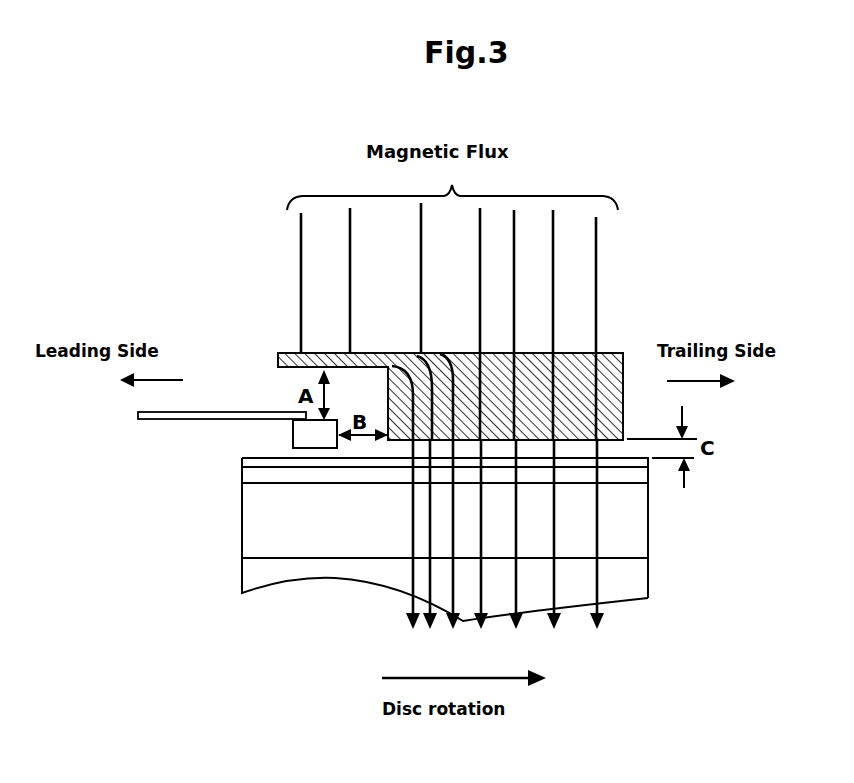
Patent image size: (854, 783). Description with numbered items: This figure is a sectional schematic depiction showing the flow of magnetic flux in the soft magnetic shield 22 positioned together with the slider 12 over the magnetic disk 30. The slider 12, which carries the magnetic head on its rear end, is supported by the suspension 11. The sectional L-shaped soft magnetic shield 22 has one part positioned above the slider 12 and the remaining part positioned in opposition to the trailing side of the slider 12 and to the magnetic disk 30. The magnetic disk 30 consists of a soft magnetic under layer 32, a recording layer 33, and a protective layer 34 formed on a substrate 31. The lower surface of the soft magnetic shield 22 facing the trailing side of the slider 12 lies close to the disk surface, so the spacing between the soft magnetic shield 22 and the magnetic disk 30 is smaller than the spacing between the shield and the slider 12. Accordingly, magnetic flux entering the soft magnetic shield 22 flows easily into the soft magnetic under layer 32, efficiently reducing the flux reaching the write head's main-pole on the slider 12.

The suspension 11 is at (250, 413).
The slider 12 is at (306, 430).
The soft magnetic shield 22 is at (612, 352).
The magnetic disk 30 is at (372, 538).
The substrate 31 is at (146, 455).
The soft magnetic under layer 32 is at (242, 533).
The recording layer 33 is at (242, 478).
The protective layer 34 is at (242, 462).